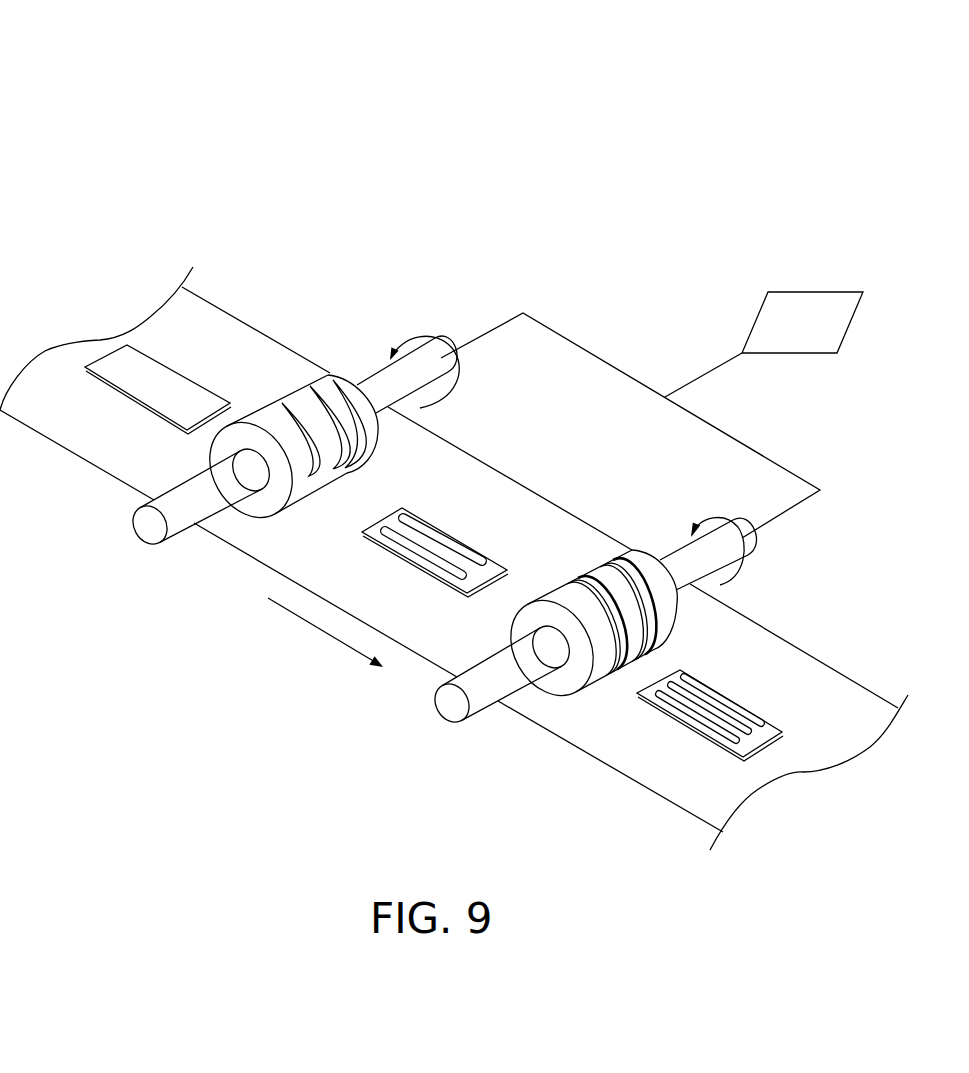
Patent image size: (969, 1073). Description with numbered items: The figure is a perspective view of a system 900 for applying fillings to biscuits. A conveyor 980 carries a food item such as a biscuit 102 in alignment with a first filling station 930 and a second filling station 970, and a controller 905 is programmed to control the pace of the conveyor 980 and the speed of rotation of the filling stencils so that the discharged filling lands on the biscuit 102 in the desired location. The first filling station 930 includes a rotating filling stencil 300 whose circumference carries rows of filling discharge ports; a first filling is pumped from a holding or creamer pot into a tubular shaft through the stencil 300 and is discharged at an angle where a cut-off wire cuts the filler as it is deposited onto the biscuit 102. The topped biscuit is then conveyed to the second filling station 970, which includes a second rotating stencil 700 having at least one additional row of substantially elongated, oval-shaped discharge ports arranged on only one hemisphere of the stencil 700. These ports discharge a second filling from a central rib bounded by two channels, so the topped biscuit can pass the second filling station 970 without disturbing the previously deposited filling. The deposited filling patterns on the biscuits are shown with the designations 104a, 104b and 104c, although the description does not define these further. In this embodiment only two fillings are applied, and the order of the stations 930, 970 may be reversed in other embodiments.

The system 900 is at (153, 91).
The biscuit 102 is at (133, 370).
The rotating filling stencil 300 is at (303, 377).
The patterned region 104a is at (448, 535).
The pattern edge 104b is at (767, 738).
The channel 104c is at (458, 575).
The second rotating stencil 700 is at (710, 635).
The controller 905 is at (803, 313).
The first filling station 930 is at (152, 533).
The second filling station 970 is at (452, 702).
The conveyor 980 is at (625, 743).